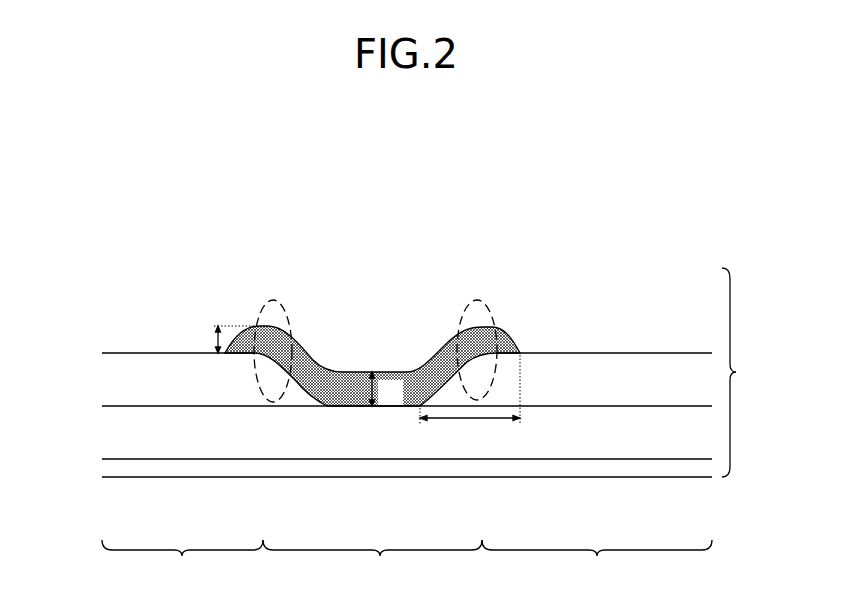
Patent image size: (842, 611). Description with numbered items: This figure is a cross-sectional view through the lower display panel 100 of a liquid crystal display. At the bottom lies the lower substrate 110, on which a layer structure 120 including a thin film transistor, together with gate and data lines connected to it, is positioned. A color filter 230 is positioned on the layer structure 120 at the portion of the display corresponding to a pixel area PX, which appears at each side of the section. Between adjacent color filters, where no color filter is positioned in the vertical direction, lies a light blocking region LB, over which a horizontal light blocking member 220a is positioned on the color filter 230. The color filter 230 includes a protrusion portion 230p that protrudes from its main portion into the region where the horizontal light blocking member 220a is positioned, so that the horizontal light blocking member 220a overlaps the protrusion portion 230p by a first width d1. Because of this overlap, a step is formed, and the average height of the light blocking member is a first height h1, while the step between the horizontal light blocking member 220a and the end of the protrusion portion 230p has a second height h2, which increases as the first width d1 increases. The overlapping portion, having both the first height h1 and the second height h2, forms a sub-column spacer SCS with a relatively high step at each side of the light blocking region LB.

The color filter 230 is at (115, 382).
The layer structure 120 is at (115, 433).
The lower substrate 110 is at (113, 469).
The lower display panel 100 is at (749, 372).
The protrusion portion 230p is at (270, 386).
The horizontal light blocking member 220a is at (323, 382).
The sub-column spacer SCS is at (273, 301).
The first height h1 is at (387, 389).
The second height h2 is at (221, 339).
The first width d1 is at (470, 400).
The pixel area PX is at (407, 564).
The light blocking region LB is at (372, 564).